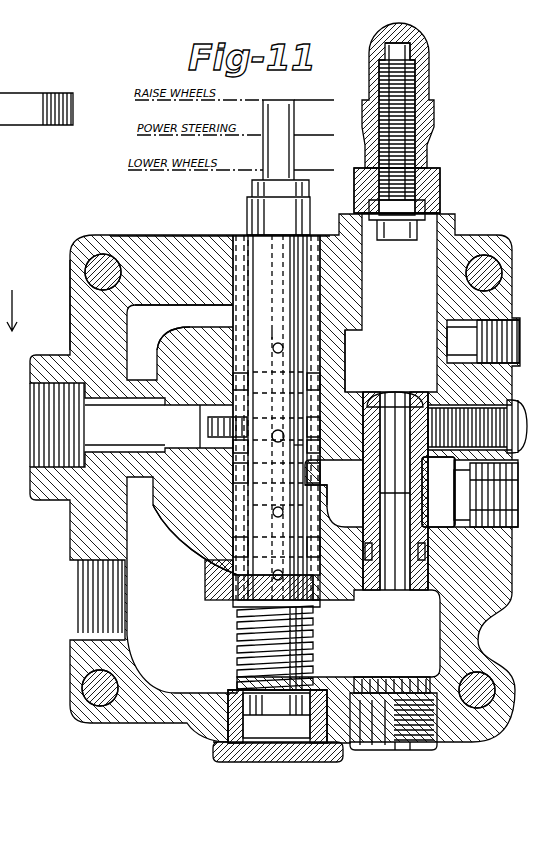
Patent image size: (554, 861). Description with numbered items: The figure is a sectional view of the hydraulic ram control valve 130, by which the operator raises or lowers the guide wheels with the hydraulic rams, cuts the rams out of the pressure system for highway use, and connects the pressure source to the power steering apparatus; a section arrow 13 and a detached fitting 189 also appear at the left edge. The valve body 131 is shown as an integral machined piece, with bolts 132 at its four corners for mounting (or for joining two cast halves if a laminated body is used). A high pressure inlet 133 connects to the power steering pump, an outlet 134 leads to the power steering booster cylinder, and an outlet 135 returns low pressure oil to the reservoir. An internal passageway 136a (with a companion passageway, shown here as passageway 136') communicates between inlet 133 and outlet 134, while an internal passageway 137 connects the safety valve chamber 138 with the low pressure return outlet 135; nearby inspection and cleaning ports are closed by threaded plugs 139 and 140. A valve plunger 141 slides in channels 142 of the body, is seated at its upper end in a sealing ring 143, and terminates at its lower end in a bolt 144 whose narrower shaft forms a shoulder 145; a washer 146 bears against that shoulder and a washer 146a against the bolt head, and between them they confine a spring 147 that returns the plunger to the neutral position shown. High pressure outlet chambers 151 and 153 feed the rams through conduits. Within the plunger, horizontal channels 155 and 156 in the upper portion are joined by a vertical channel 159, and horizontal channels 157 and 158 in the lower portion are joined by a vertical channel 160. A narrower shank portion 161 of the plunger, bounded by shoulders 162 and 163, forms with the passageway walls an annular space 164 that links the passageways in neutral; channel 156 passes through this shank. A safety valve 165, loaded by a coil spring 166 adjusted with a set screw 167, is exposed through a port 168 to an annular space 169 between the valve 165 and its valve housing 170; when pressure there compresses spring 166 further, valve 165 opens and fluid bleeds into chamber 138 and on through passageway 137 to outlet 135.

The section line 13 is at (22, 310).
The hydraulic ram control valve 130 is at (491, 233).
The valve body 131 is at (160, 242).
The bolts 132 is at (100, 265).
The high pressure inlet 133 is at (512, 486).
The outlet 134 is at (35, 452).
The outlet 135 is at (75, 594).
The internal passageway 136a is at (110, 433).
The passage 136' is at (324, 500).
The internal passageway 137 is at (137, 344).
The safety valve chamber 138 is at (347, 327).
The threaded plug 139 is at (500, 325).
The threaded plug 140 is at (437, 743).
The valve plunger 141 is at (247, 206).
The channels 142 is at (236, 322).
The sealing ring 143 is at (232, 236).
The bolt 144 is at (258, 720).
The shoulder 145 is at (232, 597).
The washer 146 is at (238, 603).
The washer 146a is at (232, 692).
The spring 147 is at (315, 645).
The high pressure outlet chamber 151 is at (240, 552).
The high pressure outlet chamber 153 is at (233, 378).
The horizontal channel 155 is at (270, 325).
The horizontal channel 156 is at (284, 436).
The horizontal channel 157 is at (308, 530).
The horizontal channel 158 is at (305, 580).
The vertical channel 159 is at (310, 402).
The vertical channel 160 is at (208, 571).
The shank portion 161 is at (293, 450).
The shoulder 162 is at (252, 430).
The shoulder 163 is at (252, 470).
The annular space 164 is at (250, 458).
The safety valve 165 is at (440, 410).
The coil spring 166 is at (433, 218).
The set screw 167 is at (428, 160).
The port 168 is at (374, 475).
The annular space 169 is at (412, 473).
The valve housing 170 is at (438, 492).
The conduit 189 is at (36, 189).